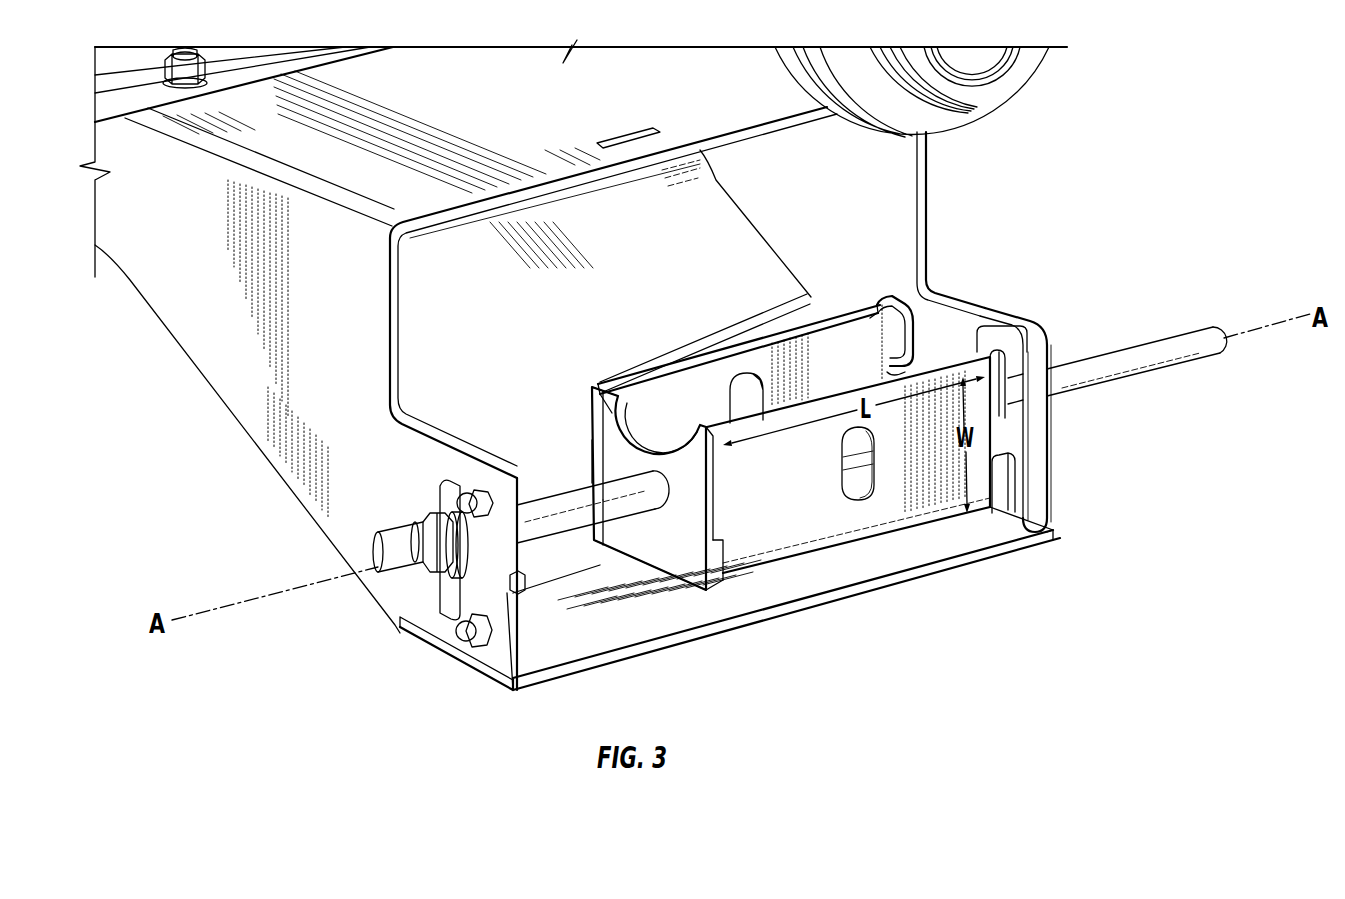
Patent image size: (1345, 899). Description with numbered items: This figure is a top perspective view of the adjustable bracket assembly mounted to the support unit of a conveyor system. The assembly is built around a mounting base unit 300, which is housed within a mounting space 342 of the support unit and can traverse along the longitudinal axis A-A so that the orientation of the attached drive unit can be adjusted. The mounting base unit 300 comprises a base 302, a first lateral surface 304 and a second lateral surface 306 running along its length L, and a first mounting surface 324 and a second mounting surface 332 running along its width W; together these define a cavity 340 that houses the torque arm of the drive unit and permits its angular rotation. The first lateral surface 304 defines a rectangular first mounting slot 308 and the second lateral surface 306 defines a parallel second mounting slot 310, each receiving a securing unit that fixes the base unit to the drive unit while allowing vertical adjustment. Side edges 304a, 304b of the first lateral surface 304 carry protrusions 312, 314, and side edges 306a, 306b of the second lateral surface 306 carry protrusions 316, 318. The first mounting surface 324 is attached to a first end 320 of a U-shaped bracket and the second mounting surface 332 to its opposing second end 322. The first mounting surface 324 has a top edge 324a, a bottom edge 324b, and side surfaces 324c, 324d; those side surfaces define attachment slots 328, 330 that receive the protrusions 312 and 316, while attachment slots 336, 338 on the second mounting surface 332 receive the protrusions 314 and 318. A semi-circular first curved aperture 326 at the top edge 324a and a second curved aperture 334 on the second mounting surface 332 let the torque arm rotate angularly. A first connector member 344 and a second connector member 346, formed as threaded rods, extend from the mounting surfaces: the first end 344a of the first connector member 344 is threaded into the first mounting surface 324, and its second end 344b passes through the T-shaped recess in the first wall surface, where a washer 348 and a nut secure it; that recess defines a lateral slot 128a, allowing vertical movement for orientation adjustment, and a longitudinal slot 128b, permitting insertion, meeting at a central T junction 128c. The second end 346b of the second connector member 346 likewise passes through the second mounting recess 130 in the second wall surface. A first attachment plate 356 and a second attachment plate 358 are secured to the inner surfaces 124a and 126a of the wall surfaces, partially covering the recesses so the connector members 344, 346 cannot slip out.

The mounting base unit 300 is at (1130, 180).
The inner surface of first wall surface 124a is at (452, 438).
The inner surface of second wall surface 126a is at (900, 195).
The second mounting recess 130 is at (1040, 442).
The second lateral surface 306 is at (717, 378).
The side edge of second lateral surface 306a is at (590, 390).
The side edge of second lateral surface 306b is at (877, 330).
The cavity 340 is at (700, 378).
The second mounting slot 310 is at (747, 385).
The attachment slot 338 is at (842, 335).
The second mounting surface 332 is at (897, 335).
The second curved aperture 334 is at (913, 335).
The protrusion 318 is at (887, 363).
The first lateral surface 304 is at (913, 497).
The first end of U-shaped bracket 320 is at (723, 523).
The side edge of first lateral surface 304a is at (713, 575).
The side edge of first lateral surface 304b is at (992, 437).
The second end of U-shaped bracket 322 is at (993, 530).
The first mounting slot 308 is at (853, 473).
The protrusion 314 is at (1000, 400).
The attachment slot 336 is at (1008, 455).
The second attachment plate 358 is at (1020, 503).
The second connector member 346 is at (1172, 343).
The second end of second connector member 346b is at (1197, 363).
The first mounting surface 324 is at (613, 417).
The first curved aperture 326 is at (653, 443).
The top edge of first mounting surface 324a is at (600, 385).
The bottom edge of first mounting surface 324b is at (647, 567).
The side surface of first mounting surface 324c is at (718, 573).
The side surface of first mounting surface 324d is at (603, 533).
The attachment slot 330 is at (630, 473).
The protrusion 316 is at (590, 463).
The protrusion 312 is at (712, 518).
The attachment slot 328 is at (697, 513).
The first connector member 344 is at (557, 500).
The first end of first connector member 344a is at (683, 477).
The second end of first connector member 344b is at (387, 580).
The first attachment plate 356 is at (420, 517).
The washer 348 is at (437, 518).
The lateral slot 128a is at (447, 613).
The longitudinal slot 128b is at (493, 653).
The central T junction 128c is at (497, 493).
The mounting space 342 is at (528, 653).
The base 302 is at (883, 552).